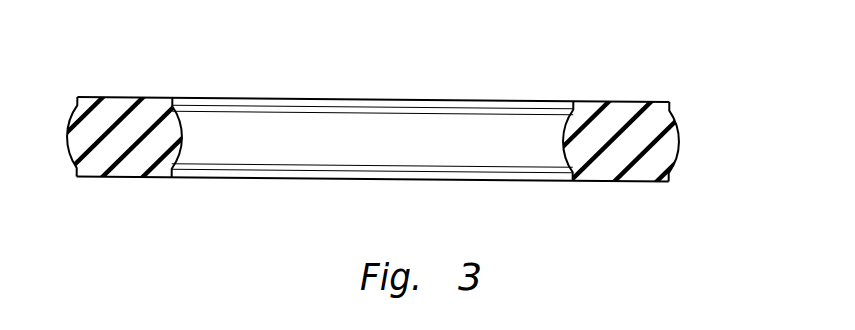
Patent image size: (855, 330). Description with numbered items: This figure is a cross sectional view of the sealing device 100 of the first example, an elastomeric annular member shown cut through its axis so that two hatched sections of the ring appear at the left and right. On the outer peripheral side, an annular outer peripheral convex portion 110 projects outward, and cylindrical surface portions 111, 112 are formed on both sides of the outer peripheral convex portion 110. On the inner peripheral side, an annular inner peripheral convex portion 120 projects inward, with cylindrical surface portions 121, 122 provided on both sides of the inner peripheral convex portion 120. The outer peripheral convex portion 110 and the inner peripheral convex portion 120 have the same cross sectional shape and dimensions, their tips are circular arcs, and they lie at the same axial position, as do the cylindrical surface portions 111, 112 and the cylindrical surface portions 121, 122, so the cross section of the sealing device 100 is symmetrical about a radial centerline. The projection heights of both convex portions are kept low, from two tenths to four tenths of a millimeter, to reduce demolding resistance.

The sealing device 100 is at (382, 134).
The outer peripheral convex portion 110 is at (679, 138).
The cylindrical surface portion 111 is at (670, 107).
The cylindrical surface portion 112 is at (670, 179).
The inner peripheral convex portion 120 is at (564, 143).
The cylindrical surface portion 121 is at (572, 106).
The cylindrical surface portion 122 is at (572, 181).